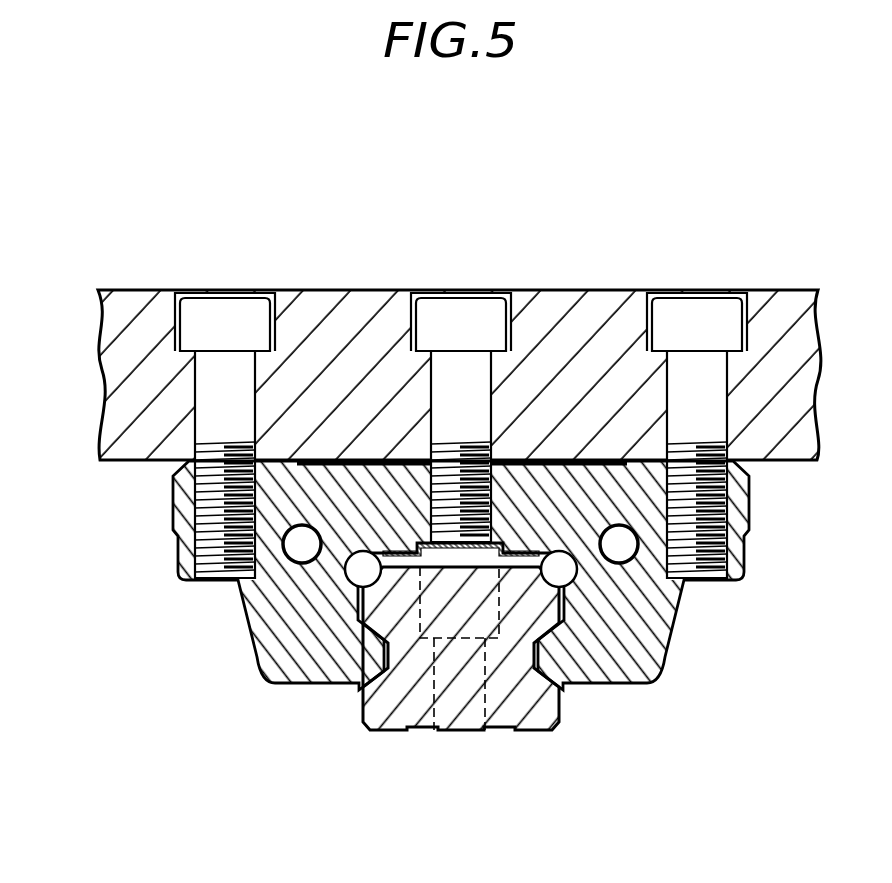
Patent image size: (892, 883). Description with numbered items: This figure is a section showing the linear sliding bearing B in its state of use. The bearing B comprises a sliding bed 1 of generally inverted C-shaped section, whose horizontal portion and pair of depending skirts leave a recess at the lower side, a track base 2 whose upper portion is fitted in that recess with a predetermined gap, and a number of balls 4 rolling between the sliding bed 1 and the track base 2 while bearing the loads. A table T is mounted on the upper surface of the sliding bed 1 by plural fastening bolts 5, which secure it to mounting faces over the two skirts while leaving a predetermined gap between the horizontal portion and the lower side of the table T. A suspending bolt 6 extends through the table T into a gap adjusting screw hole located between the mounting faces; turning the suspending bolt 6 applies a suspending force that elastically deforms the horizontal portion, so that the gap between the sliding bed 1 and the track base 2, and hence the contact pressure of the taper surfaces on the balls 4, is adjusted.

The sliding bed 1 is at (670, 640).
The track base 2 is at (520, 733).
The balls 4 is at (302, 548).
The fastening bolts 5 is at (222, 315).
The suspending bolt 6 is at (458, 313).
The linear sliding bearing B is at (429, 572).
The table T is at (589, 276).